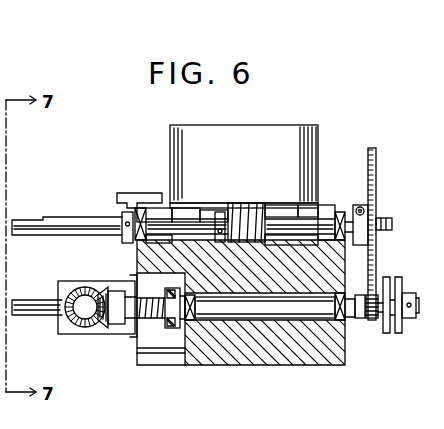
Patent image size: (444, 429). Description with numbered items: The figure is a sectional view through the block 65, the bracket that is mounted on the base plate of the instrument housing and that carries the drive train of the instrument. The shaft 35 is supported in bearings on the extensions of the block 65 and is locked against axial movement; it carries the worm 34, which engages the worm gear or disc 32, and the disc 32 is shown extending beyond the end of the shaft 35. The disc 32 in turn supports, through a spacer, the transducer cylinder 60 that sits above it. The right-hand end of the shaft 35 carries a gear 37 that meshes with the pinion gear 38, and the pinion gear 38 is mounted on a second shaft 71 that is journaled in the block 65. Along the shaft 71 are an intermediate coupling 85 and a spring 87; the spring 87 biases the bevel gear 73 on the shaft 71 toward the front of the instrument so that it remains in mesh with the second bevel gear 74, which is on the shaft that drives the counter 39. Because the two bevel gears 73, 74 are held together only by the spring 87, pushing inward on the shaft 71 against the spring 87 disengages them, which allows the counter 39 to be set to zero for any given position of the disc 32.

The worm gear 32 is at (383, 216).
The worm 34 is at (245, 206).
The shaft 35 is at (88, 221).
The gear 37 is at (368, 163).
The pinion gear 38 is at (371, 320).
The counter 39 is at (58, 283).
The transducer cylinder 60 is at (250, 160).
The bracket 65 is at (258, 365).
The shaft 71 is at (54, 318).
The bevel gear 73 is at (117, 289).
The second bevel gear 74 is at (80, 286).
The intermediate coupling 85 is at (171, 328).
The spring 87 is at (137, 321).